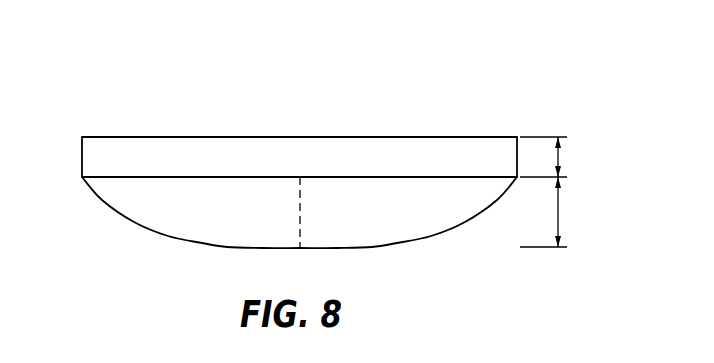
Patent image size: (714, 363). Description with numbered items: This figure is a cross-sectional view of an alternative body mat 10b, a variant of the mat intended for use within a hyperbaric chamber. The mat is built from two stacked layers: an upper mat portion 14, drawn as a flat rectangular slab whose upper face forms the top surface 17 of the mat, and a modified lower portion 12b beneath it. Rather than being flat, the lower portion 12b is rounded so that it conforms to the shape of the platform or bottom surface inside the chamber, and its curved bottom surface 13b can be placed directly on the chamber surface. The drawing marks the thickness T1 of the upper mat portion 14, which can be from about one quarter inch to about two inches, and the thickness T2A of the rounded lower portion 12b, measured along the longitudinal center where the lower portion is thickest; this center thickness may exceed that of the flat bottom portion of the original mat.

The body mat 10b is at (168, 68).
The upper mat portion 14 is at (237, 165).
The top surface 17 is at (145, 137).
The lower portion 12b is at (247, 223).
The bottom surface 13b is at (218, 246).
The thickness of upper mat portion T1 is at (560, 153).
The thickness of lens body T2A is at (560, 210).